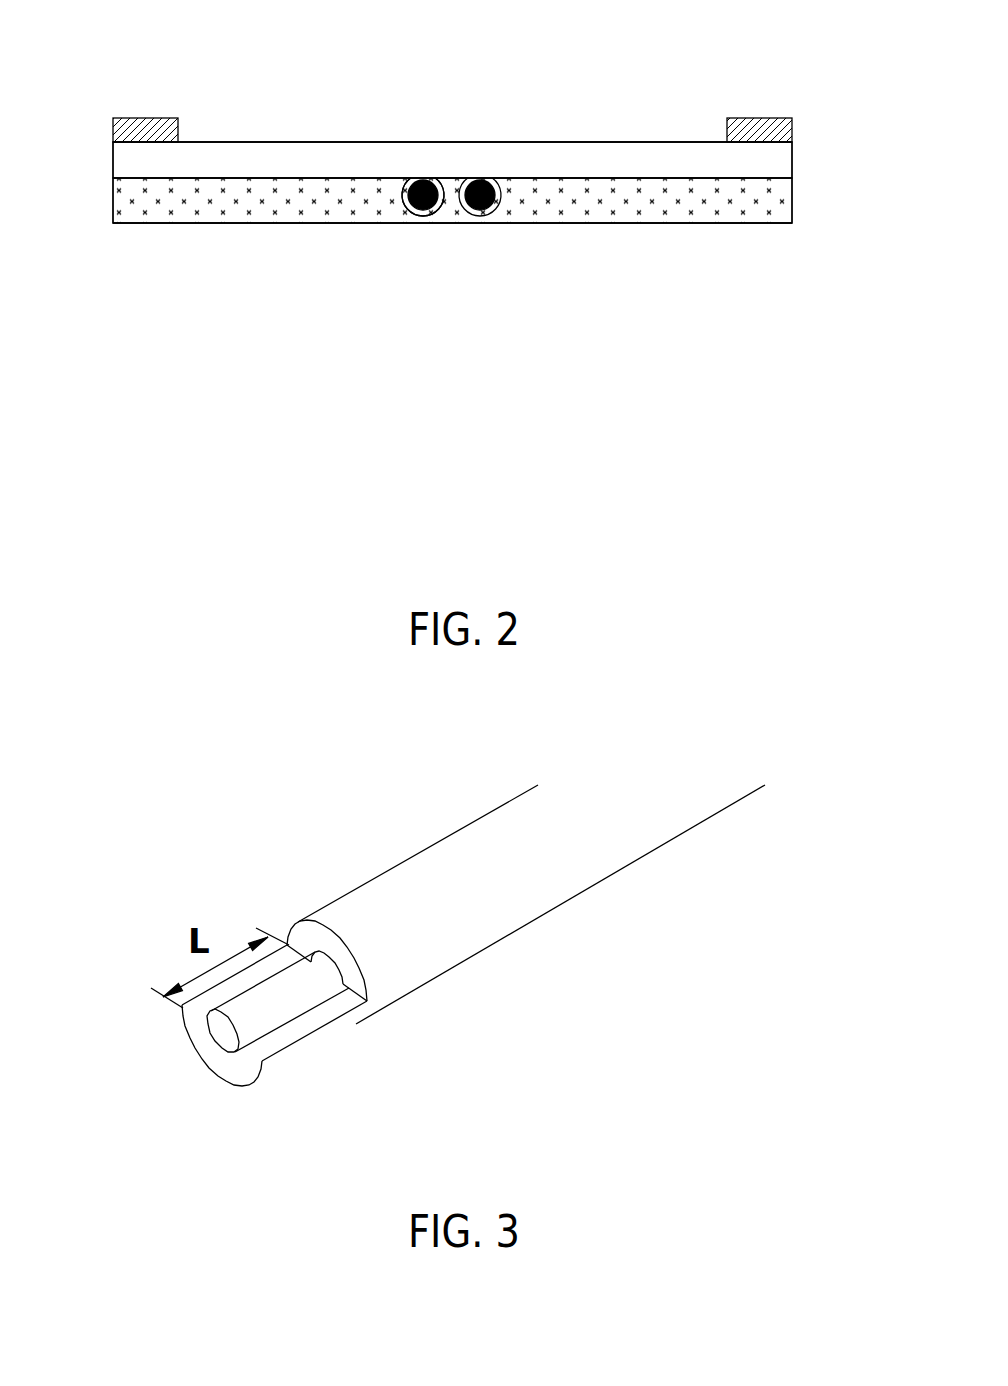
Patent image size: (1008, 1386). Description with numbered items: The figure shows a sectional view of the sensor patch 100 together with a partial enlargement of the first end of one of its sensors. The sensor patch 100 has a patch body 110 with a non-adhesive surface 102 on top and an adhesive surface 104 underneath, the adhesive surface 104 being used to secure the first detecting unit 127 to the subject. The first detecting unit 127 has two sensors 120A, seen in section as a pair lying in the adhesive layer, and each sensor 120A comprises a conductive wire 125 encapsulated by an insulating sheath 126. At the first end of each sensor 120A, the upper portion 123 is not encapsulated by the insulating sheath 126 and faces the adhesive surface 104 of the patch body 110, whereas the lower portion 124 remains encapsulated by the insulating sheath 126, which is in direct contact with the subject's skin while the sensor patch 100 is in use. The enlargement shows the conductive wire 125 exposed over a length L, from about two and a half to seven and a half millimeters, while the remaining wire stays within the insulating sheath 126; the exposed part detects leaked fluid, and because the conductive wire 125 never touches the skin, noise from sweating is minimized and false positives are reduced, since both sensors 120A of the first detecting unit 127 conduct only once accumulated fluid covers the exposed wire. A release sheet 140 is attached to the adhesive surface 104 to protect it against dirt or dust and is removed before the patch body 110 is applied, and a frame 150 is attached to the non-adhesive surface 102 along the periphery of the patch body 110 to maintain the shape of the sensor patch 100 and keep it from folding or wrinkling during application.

In FIG. 2, the sensor patch 100 is at (775, 496).
In FIG. 2, the non-adhesive surface 102 is at (652, 140).
In FIG. 2, the adhesive surface 104 is at (680, 180).
In FIG. 2, the patch body 110 is at (208, 160).
In FIG. 2, the sensor 120A is at (382, 338).
In FIG. 2, the upper portion 123 is at (497, 182).
In FIG. 2, the lower portion 124 is at (392, 190).
In FIG. 2, the conductive wire 125 is at (410, 213).
In FIG. 3, the conductive wire 125 is at (287, 993).
In FIG. 2, the insulating sheath 126 is at (427, 215).
In FIG. 3, the insulating sheath 126 is at (460, 917).
In FIG. 2, the first detecting unit 127 is at (580, 422).
In FIG. 2, the release sheet 140 is at (135, 220).
In FIG. 2, the frame 150 is at (783, 132).